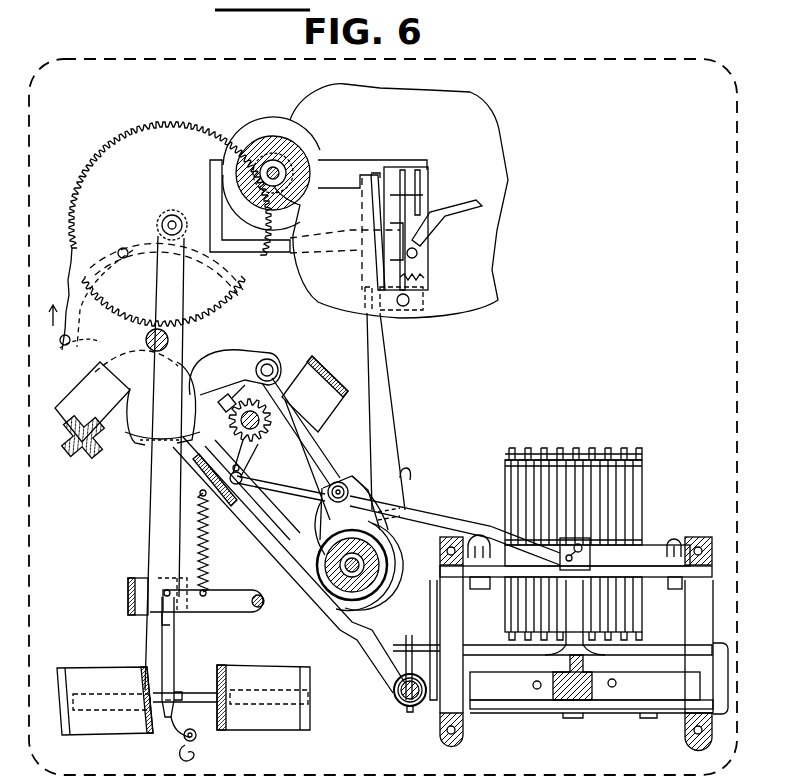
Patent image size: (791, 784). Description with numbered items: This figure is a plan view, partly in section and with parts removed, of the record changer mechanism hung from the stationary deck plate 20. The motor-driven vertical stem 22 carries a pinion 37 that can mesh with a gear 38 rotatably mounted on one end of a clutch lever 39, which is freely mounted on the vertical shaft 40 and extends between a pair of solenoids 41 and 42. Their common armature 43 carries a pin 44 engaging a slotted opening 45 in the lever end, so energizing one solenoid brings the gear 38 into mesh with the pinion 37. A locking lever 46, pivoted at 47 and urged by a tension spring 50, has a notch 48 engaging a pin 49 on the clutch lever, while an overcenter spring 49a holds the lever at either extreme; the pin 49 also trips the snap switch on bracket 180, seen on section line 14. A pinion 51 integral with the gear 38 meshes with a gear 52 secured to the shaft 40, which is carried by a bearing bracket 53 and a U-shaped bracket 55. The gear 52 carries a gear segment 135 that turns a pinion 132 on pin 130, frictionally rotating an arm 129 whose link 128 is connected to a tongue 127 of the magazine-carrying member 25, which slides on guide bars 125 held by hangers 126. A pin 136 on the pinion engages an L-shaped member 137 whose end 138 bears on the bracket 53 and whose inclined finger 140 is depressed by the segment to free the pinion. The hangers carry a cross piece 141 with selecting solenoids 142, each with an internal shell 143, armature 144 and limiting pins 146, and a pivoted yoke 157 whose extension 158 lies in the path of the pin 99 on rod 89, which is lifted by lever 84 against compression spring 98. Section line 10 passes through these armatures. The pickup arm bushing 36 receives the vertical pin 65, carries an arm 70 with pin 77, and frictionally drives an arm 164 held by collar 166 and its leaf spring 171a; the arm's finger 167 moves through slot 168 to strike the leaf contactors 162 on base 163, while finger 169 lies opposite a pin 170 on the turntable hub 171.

The section line 10 is at (630, 452).
The section line 14 is at (143, 570).
The deck plate 20 is at (488, 140).
The vertical stem 22 is at (298, 148).
The member 25 is at (655, 688).
The bushing 36 is at (365, 578).
The pinion 37 is at (273, 136).
The gear 38 is at (136, 140).
The clutch lever 39 is at (160, 262).
The vertical shaft 40 is at (158, 328).
The solenoid 41 is at (125, 728).
The solenoid 42 is at (276, 725).
The common armature 43 is at (208, 702).
The pin 44 is at (164, 735).
The slotted opening 45 is at (182, 692).
The locking lever 46 is at (238, 595).
The pivot 47 is at (265, 600).
The notch 48 is at (158, 618).
The pin 49 is at (162, 596).
The overcenter spring 49a is at (196, 746).
The tension spring 50 is at (210, 560).
The pinion 51 is at (172, 211).
The gear 52 is at (250, 300).
The bearing bracket 53 is at (95, 460).
The U-shaped bracket 55 is at (318, 362).
The vertical pin 65 is at (372, 560).
The arm 70 is at (325, 540).
The vertical pin 77 is at (345, 482).
The lever 84 is at (345, 618).
The vertical rod 89 is at (396, 696).
The compression spring 98 is at (404, 710).
The pin 99 is at (409, 632).
The guide bars 125 is at (655, 578).
The hangers 126 is at (462, 728).
The tongue 127 is at (590, 551).
The link 128 is at (420, 512).
The arm 129 is at (246, 462).
The pin 130 is at (262, 421).
The pinion 132 is at (297, 398).
The gear segment 135 is at (65, 310).
The pin 136 is at (222, 410).
The L-shaped member 137 is at (192, 418).
The end 138 is at (98, 405).
The inclined finger 140 is at (238, 383).
The cross piece 141 is at (655, 547).
The solenoids 142 is at (642, 492).
The internal shell 143 is at (640, 630).
The armature 144 is at (636, 454).
The pins 146 is at (515, 458).
The yoke 157 is at (475, 645).
The extension 158 is at (424, 610).
The leaf contactors 162 is at (404, 175).
The base 163 is at (418, 272).
The arm 164 is at (392, 400).
The collar 166 is at (392, 570).
The finger 167 is at (375, 172).
The slot 168 is at (338, 163).
The finger 169 is at (205, 136).
The pin 170 is at (234, 140).
The hub 171 is at (256, 155).
The leaf spring 171a is at (410, 475).
The bracket 180 is at (128, 605).